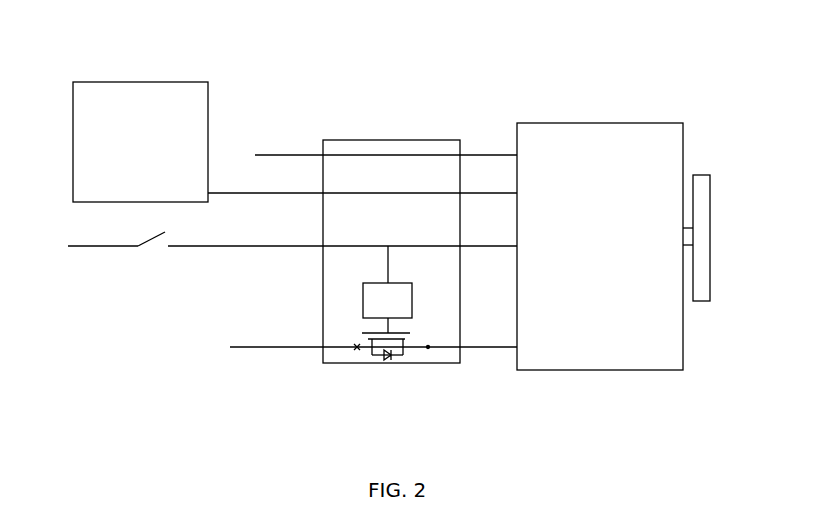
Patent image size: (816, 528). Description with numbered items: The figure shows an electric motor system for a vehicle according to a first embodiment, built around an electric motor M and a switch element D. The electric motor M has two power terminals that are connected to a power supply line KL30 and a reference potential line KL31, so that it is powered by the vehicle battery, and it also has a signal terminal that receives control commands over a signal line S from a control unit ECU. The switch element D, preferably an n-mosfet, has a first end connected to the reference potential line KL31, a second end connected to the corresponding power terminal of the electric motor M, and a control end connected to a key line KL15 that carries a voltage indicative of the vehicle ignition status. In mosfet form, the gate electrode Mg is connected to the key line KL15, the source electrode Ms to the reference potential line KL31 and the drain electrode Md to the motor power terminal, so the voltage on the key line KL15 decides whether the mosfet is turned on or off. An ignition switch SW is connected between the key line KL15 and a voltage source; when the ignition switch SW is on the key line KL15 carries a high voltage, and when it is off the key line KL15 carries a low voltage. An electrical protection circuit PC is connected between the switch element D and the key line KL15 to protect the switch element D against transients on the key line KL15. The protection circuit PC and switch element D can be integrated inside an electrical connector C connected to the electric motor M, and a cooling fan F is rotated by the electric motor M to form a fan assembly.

The control unit ECU is at (208, 84).
The signal line S is at (229, 192).
The power supply line KL30 is at (277, 155).
The electrical connector C is at (455, 140).
The electric motor M is at (683, 124).
The cooling fan F is at (708, 177).
The ignition switch SW is at (152, 249).
The key line KL15 is at (215, 247).
The reference potential line KL31 is at (248, 348).
The electrical protection circuit PC is at (366, 312).
The gate electrode Mg is at (390, 323).
The source electrode Ms is at (358, 348).
The switch element D is at (403, 357).
The drain electrode Md is at (428, 348).